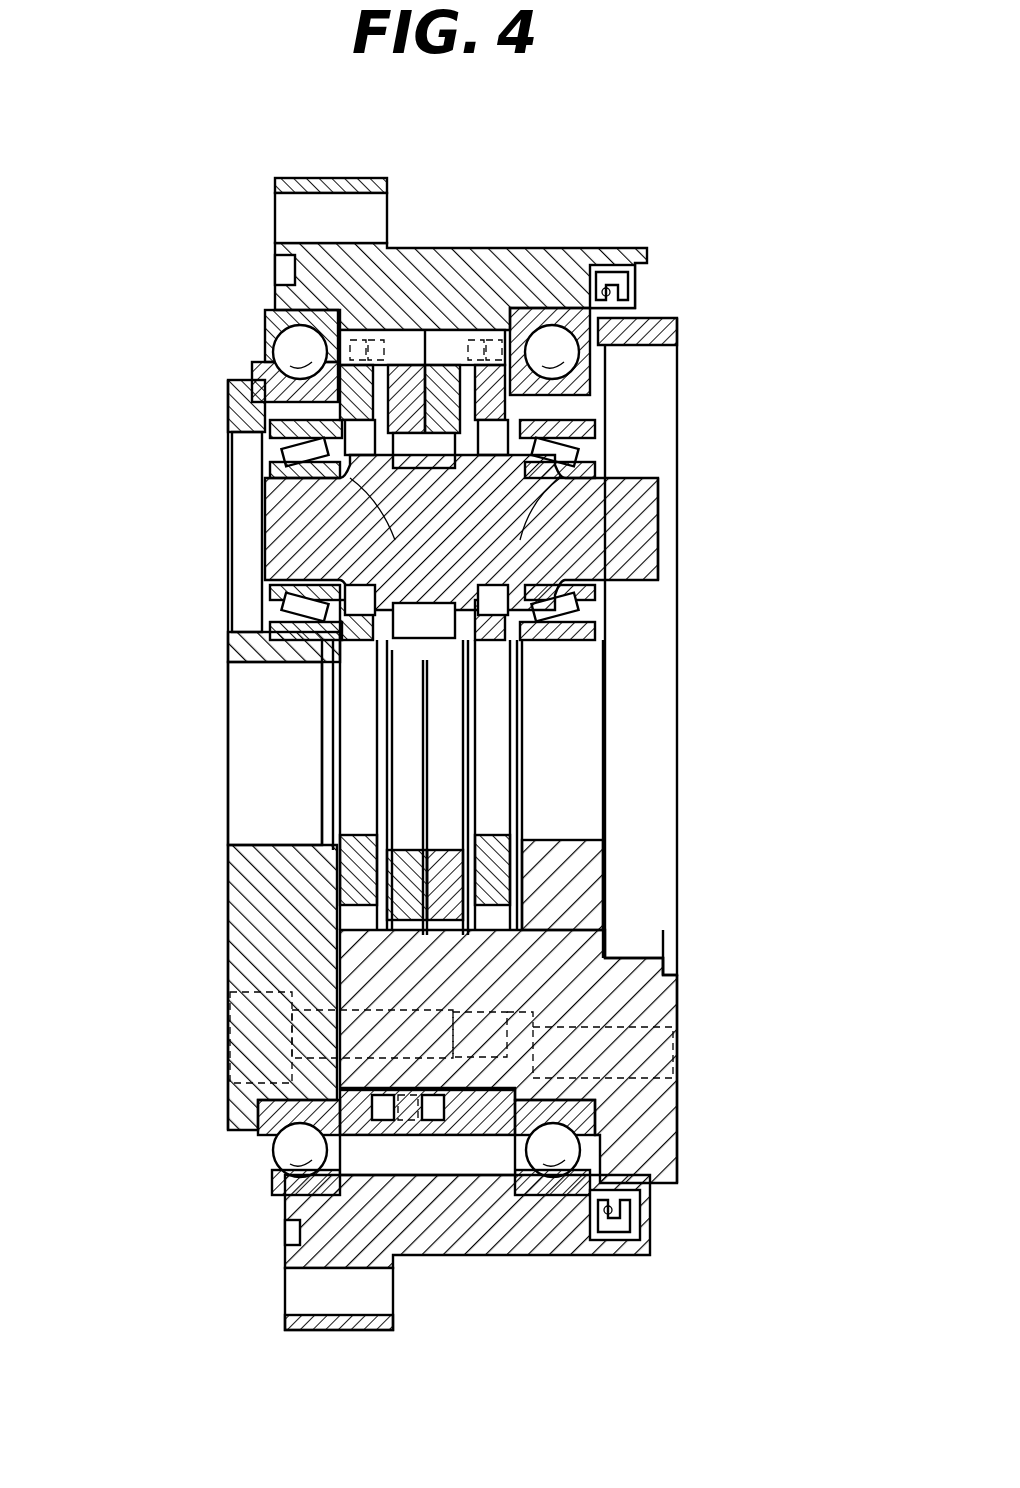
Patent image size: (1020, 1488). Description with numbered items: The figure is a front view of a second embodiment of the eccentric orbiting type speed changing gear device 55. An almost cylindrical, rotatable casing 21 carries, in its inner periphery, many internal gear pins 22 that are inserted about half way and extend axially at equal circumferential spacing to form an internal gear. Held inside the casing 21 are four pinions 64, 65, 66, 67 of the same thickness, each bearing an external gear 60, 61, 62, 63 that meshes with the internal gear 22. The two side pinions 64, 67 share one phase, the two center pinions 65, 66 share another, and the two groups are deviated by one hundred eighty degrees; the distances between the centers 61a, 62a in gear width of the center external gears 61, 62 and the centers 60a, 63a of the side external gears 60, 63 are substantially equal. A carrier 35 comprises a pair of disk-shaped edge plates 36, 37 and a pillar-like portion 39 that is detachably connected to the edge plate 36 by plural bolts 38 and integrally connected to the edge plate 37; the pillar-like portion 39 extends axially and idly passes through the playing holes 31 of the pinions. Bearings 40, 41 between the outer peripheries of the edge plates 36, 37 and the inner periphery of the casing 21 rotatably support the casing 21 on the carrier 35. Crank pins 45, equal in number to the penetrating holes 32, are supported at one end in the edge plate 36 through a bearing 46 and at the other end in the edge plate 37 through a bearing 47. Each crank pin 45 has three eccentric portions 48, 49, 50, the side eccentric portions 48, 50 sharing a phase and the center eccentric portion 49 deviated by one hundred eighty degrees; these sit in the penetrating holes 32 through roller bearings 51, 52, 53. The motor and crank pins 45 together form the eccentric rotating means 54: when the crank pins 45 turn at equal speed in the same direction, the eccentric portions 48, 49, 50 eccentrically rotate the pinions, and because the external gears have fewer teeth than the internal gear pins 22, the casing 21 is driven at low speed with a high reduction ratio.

The casing 21 is at (412, 265).
The internal gear pins 22 is at (440, 345).
The playing hole 31 is at (335, 913).
The penetrating holes 32 is at (340, 665).
The carrier 35 is at (680, 990).
The edge plate 36 is at (270, 947).
The edge plate 37 is at (663, 1008).
The bolts 38 is at (215, 1040).
The pillar-like portion 39 is at (437, 947).
The bearing 40 is at (258, 373).
The bearing 41 is at (615, 368).
The crank pin 45 is at (620, 518).
The bearing 46 is at (262, 470).
The bearing 47 is at (570, 647).
The eccentric portion 48 is at (300, 488).
The eccentric portion 49 is at (395, 555).
The eccentric portion 50 is at (495, 468).
The roller bearing 51 is at (425, 580).
The roller bearing 52 is at (400, 512).
The roller bearing 53 is at (493, 585).
The eccentric rotating means 54 is at (628, 585).
The eccentric orbiting type speed changing gear device 55 is at (665, 292).
The external gear 60 is at (372, 353).
The center in gear width 60a is at (357, 357).
The external gear 61 is at (388, 1138).
The center in gear width 61a is at (408, 1138).
The external gear 62 is at (470, 1138).
The center in gear width 62a is at (440, 1138).
The external gear 63 is at (477, 353).
The center in gear width 63a is at (525, 365).
The pinion 64 is at (353, 847).
The pinion 65 is at (400, 847).
The pinion 66 is at (467, 853).
The pinion 67 is at (497, 847).